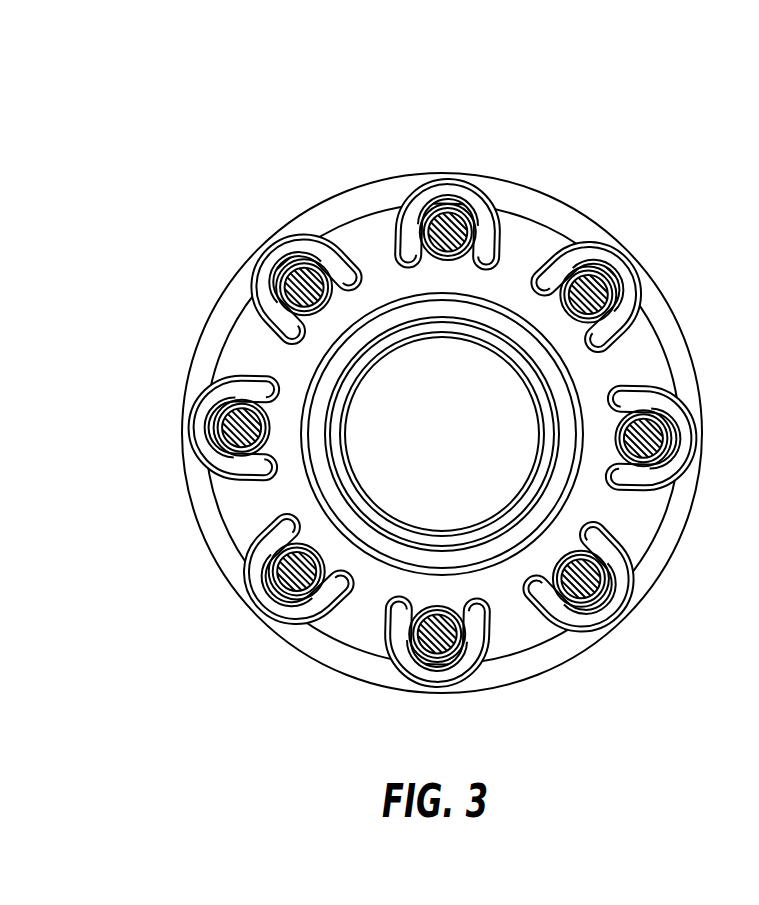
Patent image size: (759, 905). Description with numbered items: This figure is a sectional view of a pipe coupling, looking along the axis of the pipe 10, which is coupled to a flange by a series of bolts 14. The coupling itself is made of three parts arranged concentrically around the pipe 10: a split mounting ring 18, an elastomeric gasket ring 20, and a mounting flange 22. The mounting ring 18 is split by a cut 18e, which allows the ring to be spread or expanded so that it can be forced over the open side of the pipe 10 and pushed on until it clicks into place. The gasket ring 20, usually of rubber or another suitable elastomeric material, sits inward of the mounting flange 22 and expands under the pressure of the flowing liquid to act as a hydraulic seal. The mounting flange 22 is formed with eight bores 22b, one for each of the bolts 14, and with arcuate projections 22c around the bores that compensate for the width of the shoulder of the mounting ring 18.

The pipe 10 is at (350, 483).
The bolts 14 is at (613, 257).
The split mounting ring 18 is at (304, 487).
The cut 18e is at (440, 293).
The elastomeric gasket ring 20 is at (398, 547).
The mounting flange 22 is at (545, 217).
The bores 22b is at (487, 722).
The arcuate projections 22c is at (478, 205).